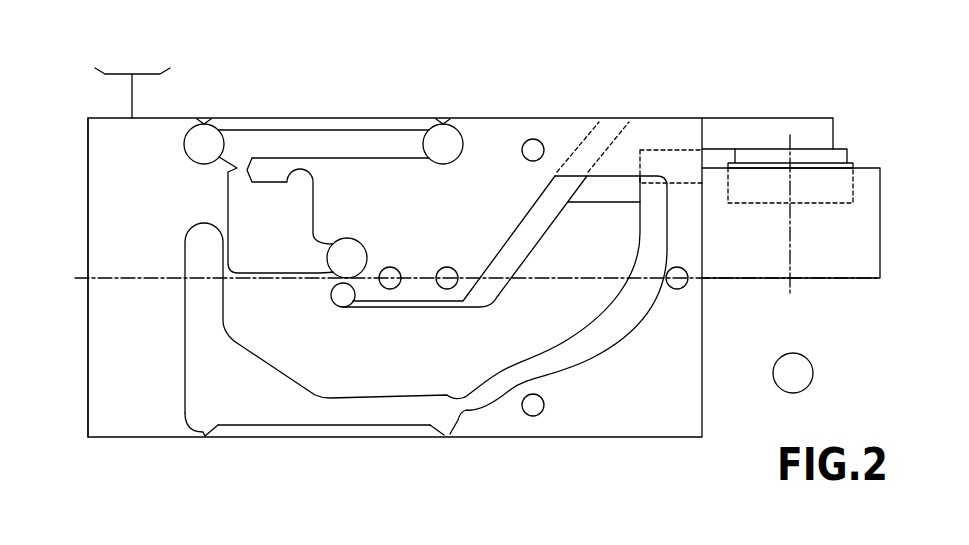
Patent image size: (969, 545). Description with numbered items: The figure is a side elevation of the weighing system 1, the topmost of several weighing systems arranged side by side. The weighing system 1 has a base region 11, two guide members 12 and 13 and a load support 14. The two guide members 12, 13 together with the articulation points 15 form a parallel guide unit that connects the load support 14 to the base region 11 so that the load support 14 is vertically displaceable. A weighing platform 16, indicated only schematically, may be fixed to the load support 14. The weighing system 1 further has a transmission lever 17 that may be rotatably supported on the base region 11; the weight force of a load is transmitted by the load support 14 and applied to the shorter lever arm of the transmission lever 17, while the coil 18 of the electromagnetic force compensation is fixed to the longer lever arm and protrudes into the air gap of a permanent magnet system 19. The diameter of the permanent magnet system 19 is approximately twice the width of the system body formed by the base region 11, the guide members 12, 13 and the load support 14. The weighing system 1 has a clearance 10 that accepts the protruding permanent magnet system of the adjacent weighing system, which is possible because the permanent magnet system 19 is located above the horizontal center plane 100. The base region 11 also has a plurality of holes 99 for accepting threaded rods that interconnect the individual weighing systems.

The weighing system 1 is at (380, 56).
The clearance 10 is at (793, 373).
The base region 11 is at (574, 122).
The guide member 12 is at (328, 118).
The guide member 13 is at (305, 430).
The load support 14 is at (115, 427).
The articulation points 15 is at (206, 120).
The weighing platform 16 is at (100, 81).
The transmission lever 17 is at (747, 120).
The coil 18 is at (852, 165).
The permanent magnet system 19 is at (864, 266).
The holes 99 is at (391, 268).
The horizontal center plane 100 is at (83, 280).